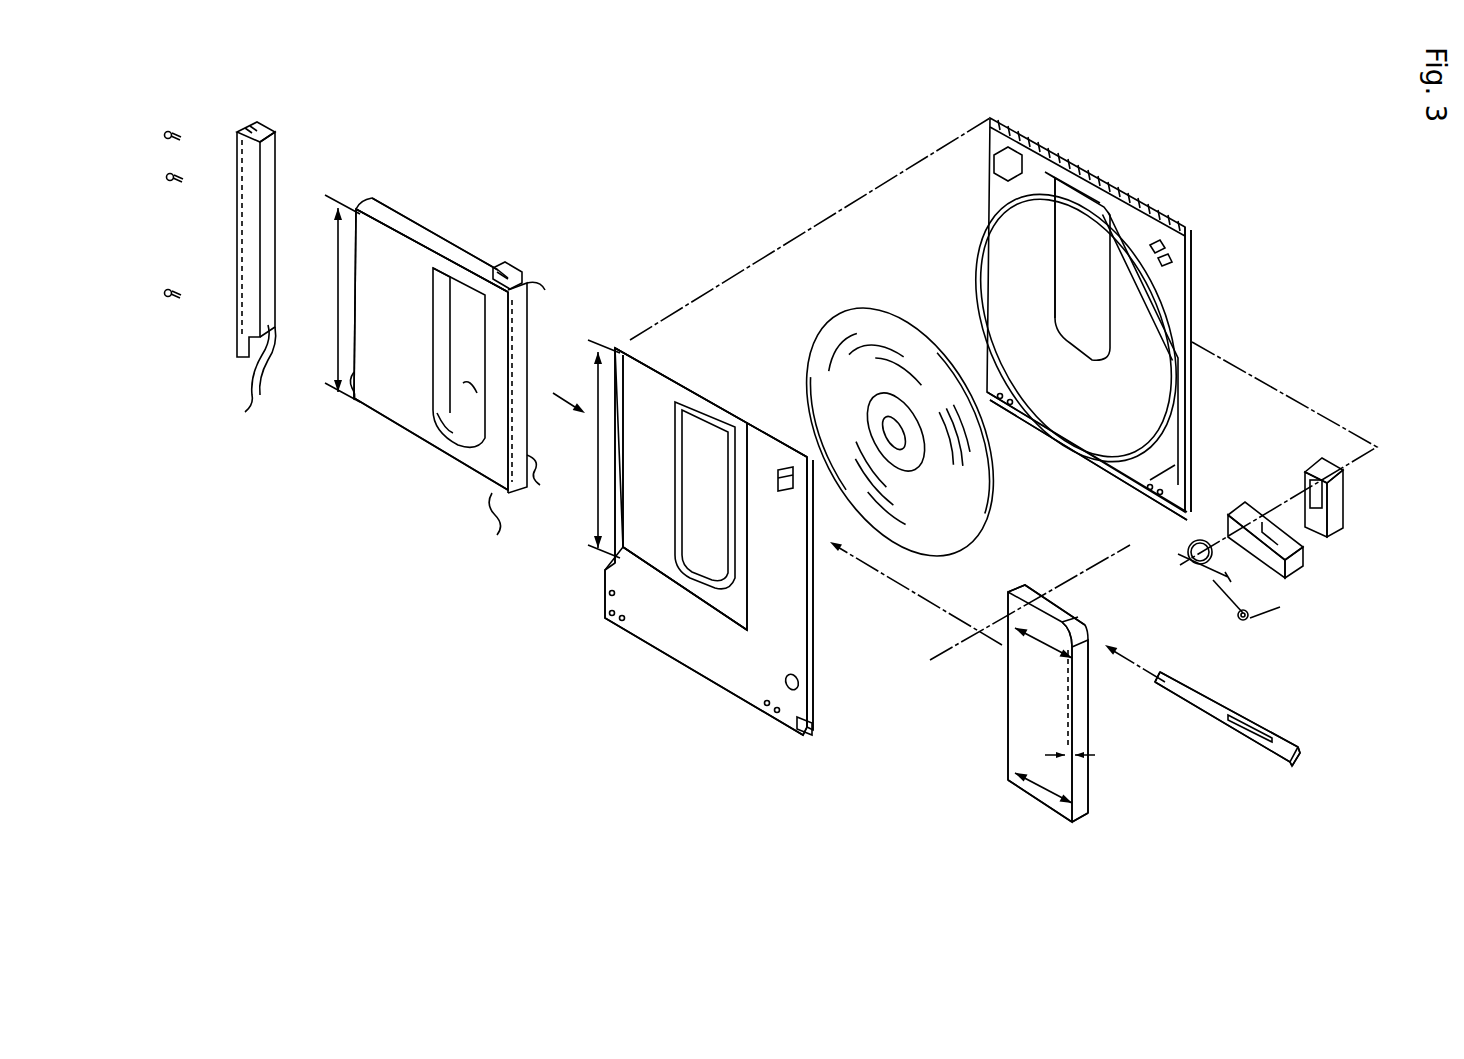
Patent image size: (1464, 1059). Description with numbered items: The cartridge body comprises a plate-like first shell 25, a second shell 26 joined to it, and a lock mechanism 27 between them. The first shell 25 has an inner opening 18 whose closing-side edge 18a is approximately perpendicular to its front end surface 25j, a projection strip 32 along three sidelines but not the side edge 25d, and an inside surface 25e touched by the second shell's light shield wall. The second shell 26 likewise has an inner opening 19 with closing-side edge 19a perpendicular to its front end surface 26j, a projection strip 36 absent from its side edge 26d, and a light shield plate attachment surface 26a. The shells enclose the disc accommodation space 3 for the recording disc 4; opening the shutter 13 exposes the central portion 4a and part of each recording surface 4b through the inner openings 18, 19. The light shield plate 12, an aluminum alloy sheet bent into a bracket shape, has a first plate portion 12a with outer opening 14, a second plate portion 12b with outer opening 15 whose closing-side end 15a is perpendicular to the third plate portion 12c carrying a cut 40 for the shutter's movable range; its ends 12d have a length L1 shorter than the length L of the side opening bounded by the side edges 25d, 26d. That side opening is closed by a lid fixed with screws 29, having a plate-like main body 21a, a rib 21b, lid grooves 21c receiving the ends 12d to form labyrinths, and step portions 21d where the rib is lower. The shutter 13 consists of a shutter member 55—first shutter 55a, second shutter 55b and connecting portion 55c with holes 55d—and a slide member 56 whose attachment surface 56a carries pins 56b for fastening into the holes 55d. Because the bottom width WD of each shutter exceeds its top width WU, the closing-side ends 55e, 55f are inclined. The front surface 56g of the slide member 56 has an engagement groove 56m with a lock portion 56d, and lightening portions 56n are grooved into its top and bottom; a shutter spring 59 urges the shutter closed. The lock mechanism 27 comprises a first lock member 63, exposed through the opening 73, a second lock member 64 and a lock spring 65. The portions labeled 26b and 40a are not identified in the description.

The disc accommodation space 3 is at (1010, 237).
The recording disc 4 is at (837, 296).
The central portion 4a is at (920, 453).
The recording surface 4b is at (896, 345).
The light shield plate 12 is at (380, 182).
The first plate portion 12a is at (528, 322).
The second plate portion 12b is at (500, 375).
The third plate portion 12c is at (447, 243).
The opening-side ends of light shield plate 12d is at (545, 290).
The shutter 13 is at (995, 770).
The outer opening 14 is at (455, 303).
The outer opening 15 is at (440, 395).
The outer opening closing-side end 15a is at (465, 415).
The inner opening 18 is at (1065, 237).
The inner opening closing-side edge 18a is at (1100, 299).
The inner opening 19 is at (700, 582).
The inner opening closing-side edge 19a is at (727, 513).
The main body 21a is at (246, 128).
The rib 21b is at (262, 195).
The lid grooves 21c is at (272, 128).
The step portions 21d is at (250, 386).
The first shell 25 is at (1050, 135).
The side edge 25d is at (988, 130).
The inside surface 25e is at (1083, 413).
The front end surface 25j is at (1145, 215).
The second shell 26 is at (660, 358).
The light shield plate attachment surface 26a is at (745, 542).
The raised frame portion 26b is at (640, 455).
The side edge 26d is at (612, 525).
The front end surface 26j is at (733, 420).
The lock mechanism 27 is at (1348, 545).
The screws 29 is at (163, 291).
The projection strip 32 is at (1157, 487).
The projection strip 36 is at (814, 655).
The cut 40 is at (522, 274).
The bracket tab 40a is at (502, 270).
The shutter member 55 is at (1102, 780).
The first shutter 55a is at (1090, 748).
The second shutter 55b is at (1007, 713).
The connecting portion 55c is at (1066, 600).
The holes 55d is at (1025, 590).
The shutter-closing-side end 55e is at (1090, 705).
The shutter-closing-side end 55f is at (1090, 812).
The slide member 56 is at (1255, 702).
The attachment surface 56a is at (1195, 692).
The pins 56b is at (1170, 676).
The lock portion 56d is at (1300, 748).
The front surface 56g is at (1258, 728).
The engagement groove 56m is at (1296, 762).
The lightening portions 56n is at (1248, 748).
The shutter spring 59 is at (1246, 606).
The first lock member 63 is at (1345, 492).
The second lock member 64 is at (1245, 505).
The lock spring 65 is at (1205, 540).
The opening 73 is at (785, 462).
The length of opening L is at (586, 449).
The length of light shield plate ends L1 is at (338, 298).
The top width WU is at (1043, 652).
The bottom width WD is at (1043, 782).